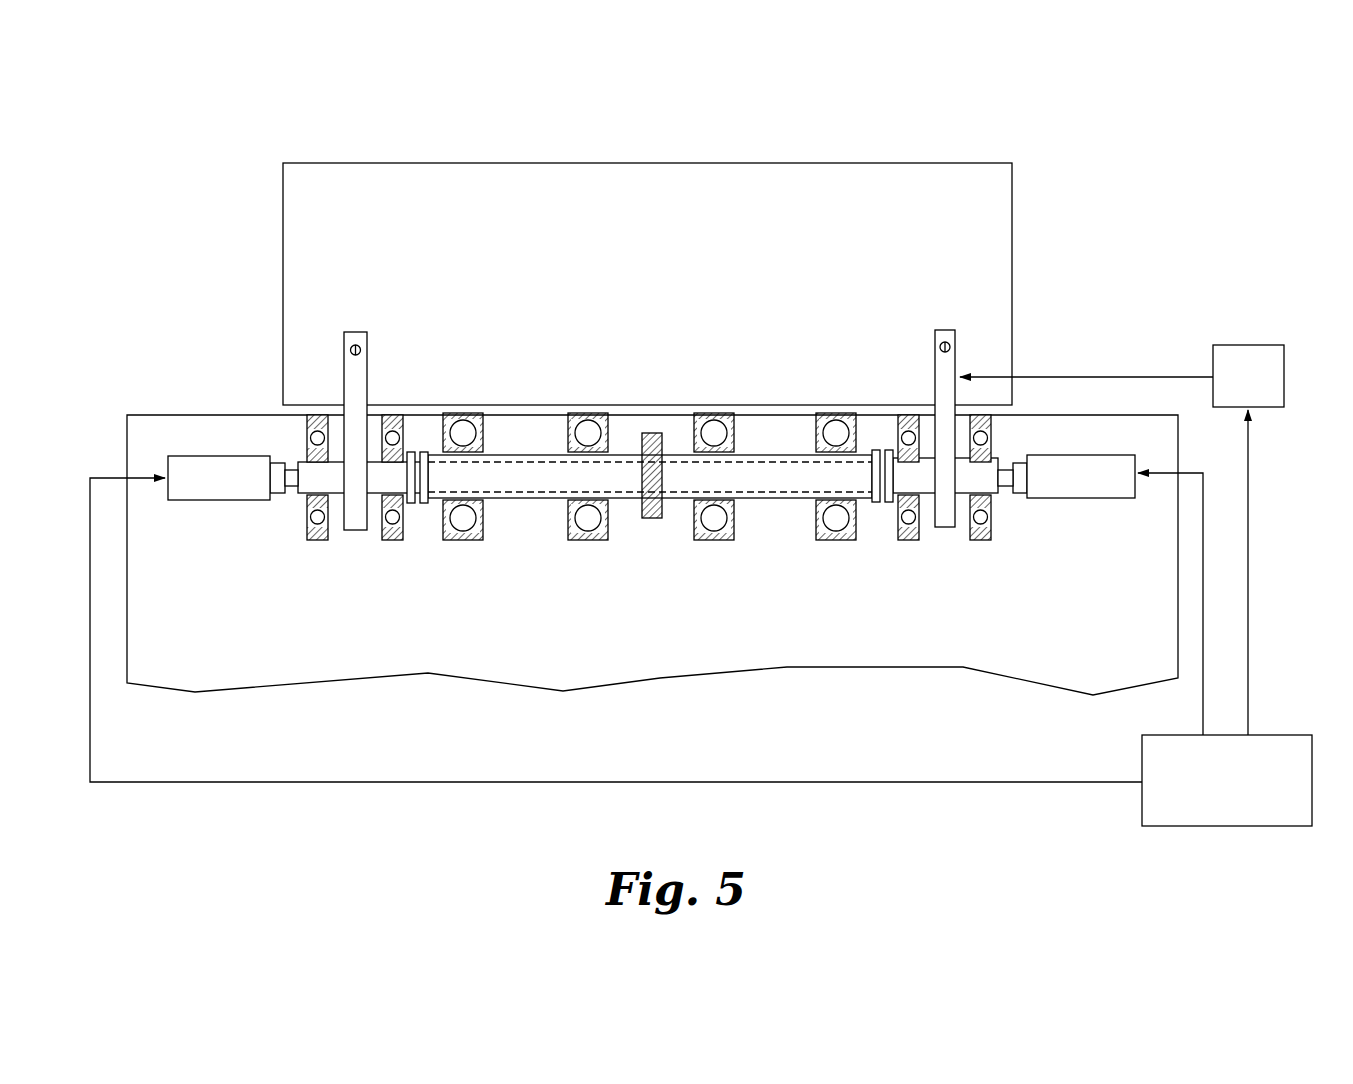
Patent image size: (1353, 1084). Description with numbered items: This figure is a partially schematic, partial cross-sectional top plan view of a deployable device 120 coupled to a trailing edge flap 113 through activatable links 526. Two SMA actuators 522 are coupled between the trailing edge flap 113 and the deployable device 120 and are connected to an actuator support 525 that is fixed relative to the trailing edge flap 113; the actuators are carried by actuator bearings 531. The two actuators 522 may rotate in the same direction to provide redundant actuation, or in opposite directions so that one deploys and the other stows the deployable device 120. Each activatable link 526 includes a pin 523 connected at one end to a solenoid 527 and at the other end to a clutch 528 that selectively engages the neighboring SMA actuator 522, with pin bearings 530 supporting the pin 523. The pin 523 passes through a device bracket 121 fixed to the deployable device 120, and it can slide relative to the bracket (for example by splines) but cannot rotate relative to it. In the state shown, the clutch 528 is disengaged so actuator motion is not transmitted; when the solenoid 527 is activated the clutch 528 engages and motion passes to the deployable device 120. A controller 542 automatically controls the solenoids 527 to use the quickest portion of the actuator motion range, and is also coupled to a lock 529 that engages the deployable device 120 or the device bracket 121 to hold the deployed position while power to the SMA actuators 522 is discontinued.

The trailing edge flap 113 is at (833, 640).
The deployable device 120 is at (997, 215).
The device bracket 121 is at (357, 338).
The SMA actuator 522 is at (770, 470).
The pin 523 is at (339, 473).
The actuator support 525 is at (652, 518).
The activatable link 526 is at (235, 436).
The solenoid 527 is at (222, 502).
The clutch 528 is at (418, 522).
The lock 529 is at (1255, 345).
The pin bearings 530 is at (378, 544).
The actuator bearings 531 is at (585, 414).
The controller 542 is at (1193, 826).